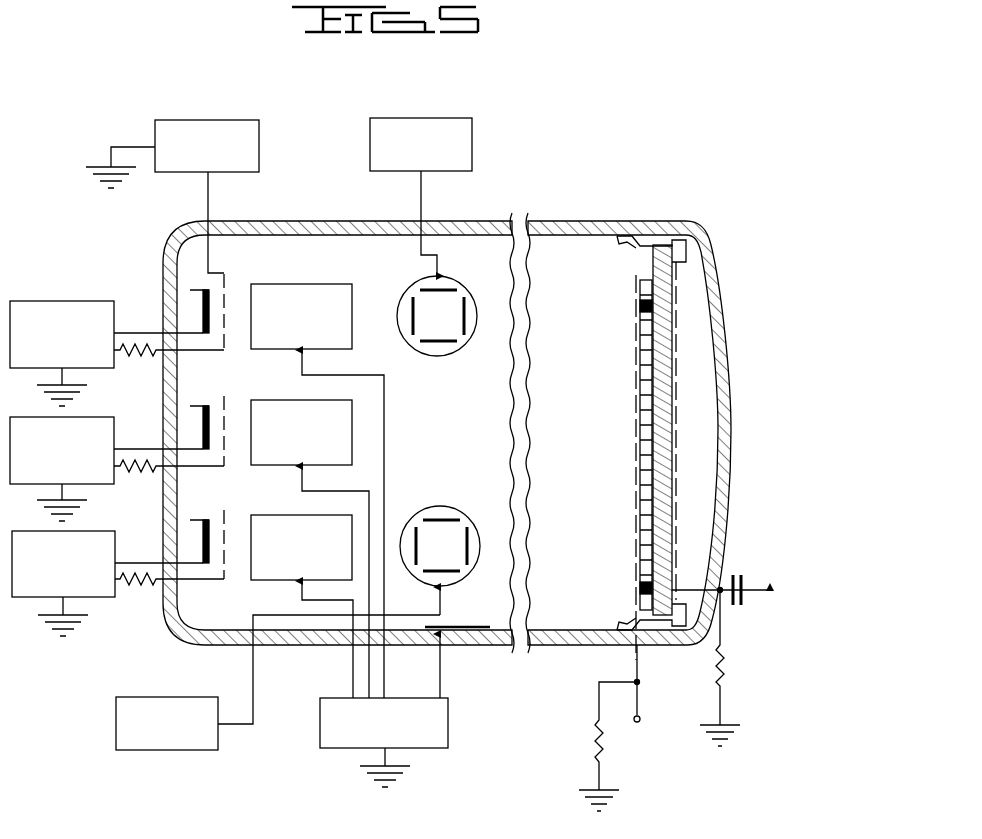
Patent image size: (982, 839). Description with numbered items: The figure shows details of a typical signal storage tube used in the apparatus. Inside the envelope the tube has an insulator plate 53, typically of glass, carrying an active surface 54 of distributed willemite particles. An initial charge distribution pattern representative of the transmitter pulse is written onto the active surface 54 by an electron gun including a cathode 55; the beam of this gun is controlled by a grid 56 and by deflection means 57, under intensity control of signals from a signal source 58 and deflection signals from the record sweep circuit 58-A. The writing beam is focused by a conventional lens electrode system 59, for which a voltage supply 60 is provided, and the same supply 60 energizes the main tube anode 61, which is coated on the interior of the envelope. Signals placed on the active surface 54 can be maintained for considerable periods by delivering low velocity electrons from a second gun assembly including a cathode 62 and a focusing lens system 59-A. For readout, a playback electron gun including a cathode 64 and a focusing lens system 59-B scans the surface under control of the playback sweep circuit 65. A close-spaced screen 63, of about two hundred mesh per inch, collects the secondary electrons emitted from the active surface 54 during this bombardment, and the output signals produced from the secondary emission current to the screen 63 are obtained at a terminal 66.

The insulator plate 53 is at (660, 250).
The active surface 54 is at (645, 345).
The cathode 55 is at (203, 298).
The grid 56 is at (226, 284).
The deflection means 57 is at (474, 298).
The signal source 58 is at (190, 120).
The sweep circuit 58-A is at (412, 118).
The lens electrode system 59 is at (315, 284).
The focusing lens system 59-A is at (299, 400).
The focusing lens system 59-B is at (299, 515).
The voltage supply 60 is at (320, 727).
The main tube anode 61 is at (462, 627).
The cathode 62 is at (203, 414).
The screen 63 is at (636, 460).
The cathode 64 is at (203, 528).
The playback sweep circuit 65 is at (116, 724).
The terminal 66 is at (641, 720).